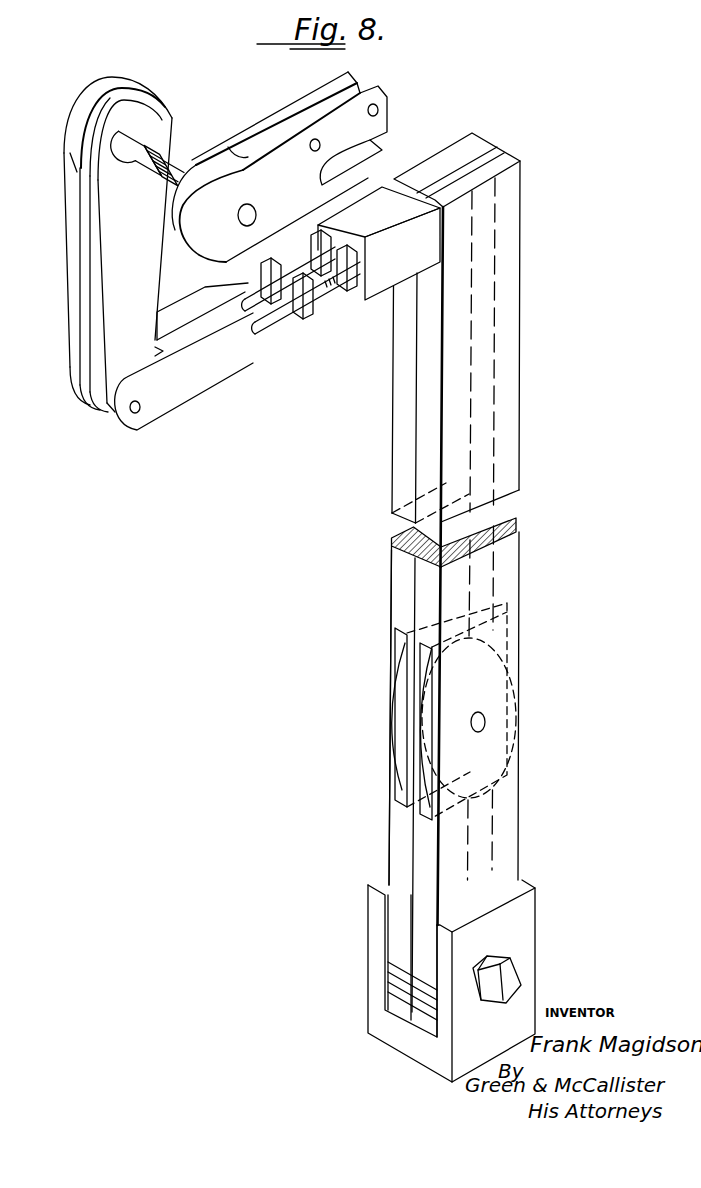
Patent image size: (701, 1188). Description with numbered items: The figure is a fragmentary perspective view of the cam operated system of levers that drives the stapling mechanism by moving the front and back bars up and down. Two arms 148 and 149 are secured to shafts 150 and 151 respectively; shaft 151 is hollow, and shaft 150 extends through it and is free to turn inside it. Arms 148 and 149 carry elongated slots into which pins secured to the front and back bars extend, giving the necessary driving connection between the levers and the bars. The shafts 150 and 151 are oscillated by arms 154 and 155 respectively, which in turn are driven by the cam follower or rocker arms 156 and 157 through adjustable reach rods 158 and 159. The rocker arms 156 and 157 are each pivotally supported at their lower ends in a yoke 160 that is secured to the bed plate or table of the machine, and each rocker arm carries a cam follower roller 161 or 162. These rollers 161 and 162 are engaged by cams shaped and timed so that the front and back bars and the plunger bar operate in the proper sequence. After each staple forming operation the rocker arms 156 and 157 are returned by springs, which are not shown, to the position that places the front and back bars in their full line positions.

The arm 148 is at (270, 172).
The arm 149 is at (267, 128).
The shaft 150 is at (160, 162).
The shaft 151 is at (142, 137).
The arm 154 is at (70, 277).
The arm 155 is at (126, 245).
The cam follower or rocker arm 156 is at (392, 472).
The cam follower or rocker arm 157 is at (516, 450).
The adjustable reach rod 158 is at (330, 294).
The adjustable reach rod 159 is at (250, 290).
The yoke 160 is at (524, 928).
The cam follower roller 161 is at (392, 703).
The cam follower roller 162 is at (420, 732).